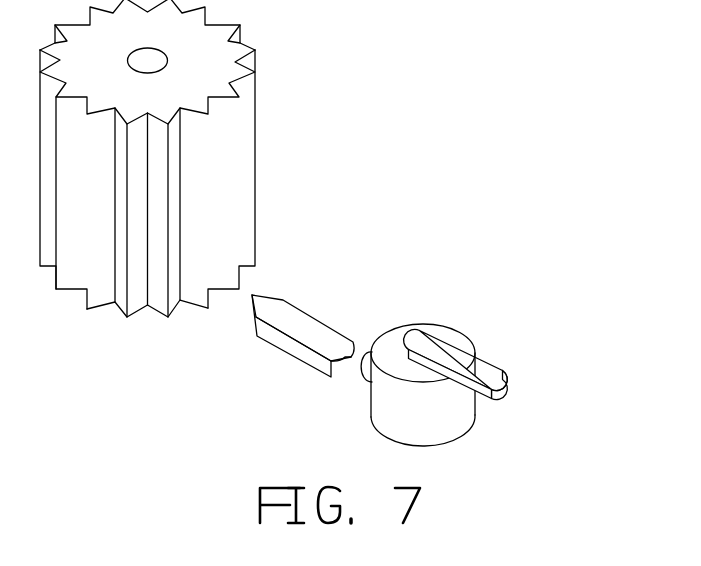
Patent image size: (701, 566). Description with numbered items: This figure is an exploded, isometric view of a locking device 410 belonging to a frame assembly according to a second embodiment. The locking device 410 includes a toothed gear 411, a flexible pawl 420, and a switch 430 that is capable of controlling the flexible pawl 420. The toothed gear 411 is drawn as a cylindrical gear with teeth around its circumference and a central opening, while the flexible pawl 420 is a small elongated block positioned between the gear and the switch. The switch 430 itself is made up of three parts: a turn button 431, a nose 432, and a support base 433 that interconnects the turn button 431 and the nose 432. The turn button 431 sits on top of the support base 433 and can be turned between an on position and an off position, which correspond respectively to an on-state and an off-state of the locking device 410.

The locking device 410 is at (385, 34).
The toothed gear 411 is at (242, 153).
The flexible pawl 420 is at (295, 318).
The switch 430 is at (522, 390).
The turn button 431 is at (442, 345).
The nose 432 is at (362, 344).
The support base 433 is at (440, 423).